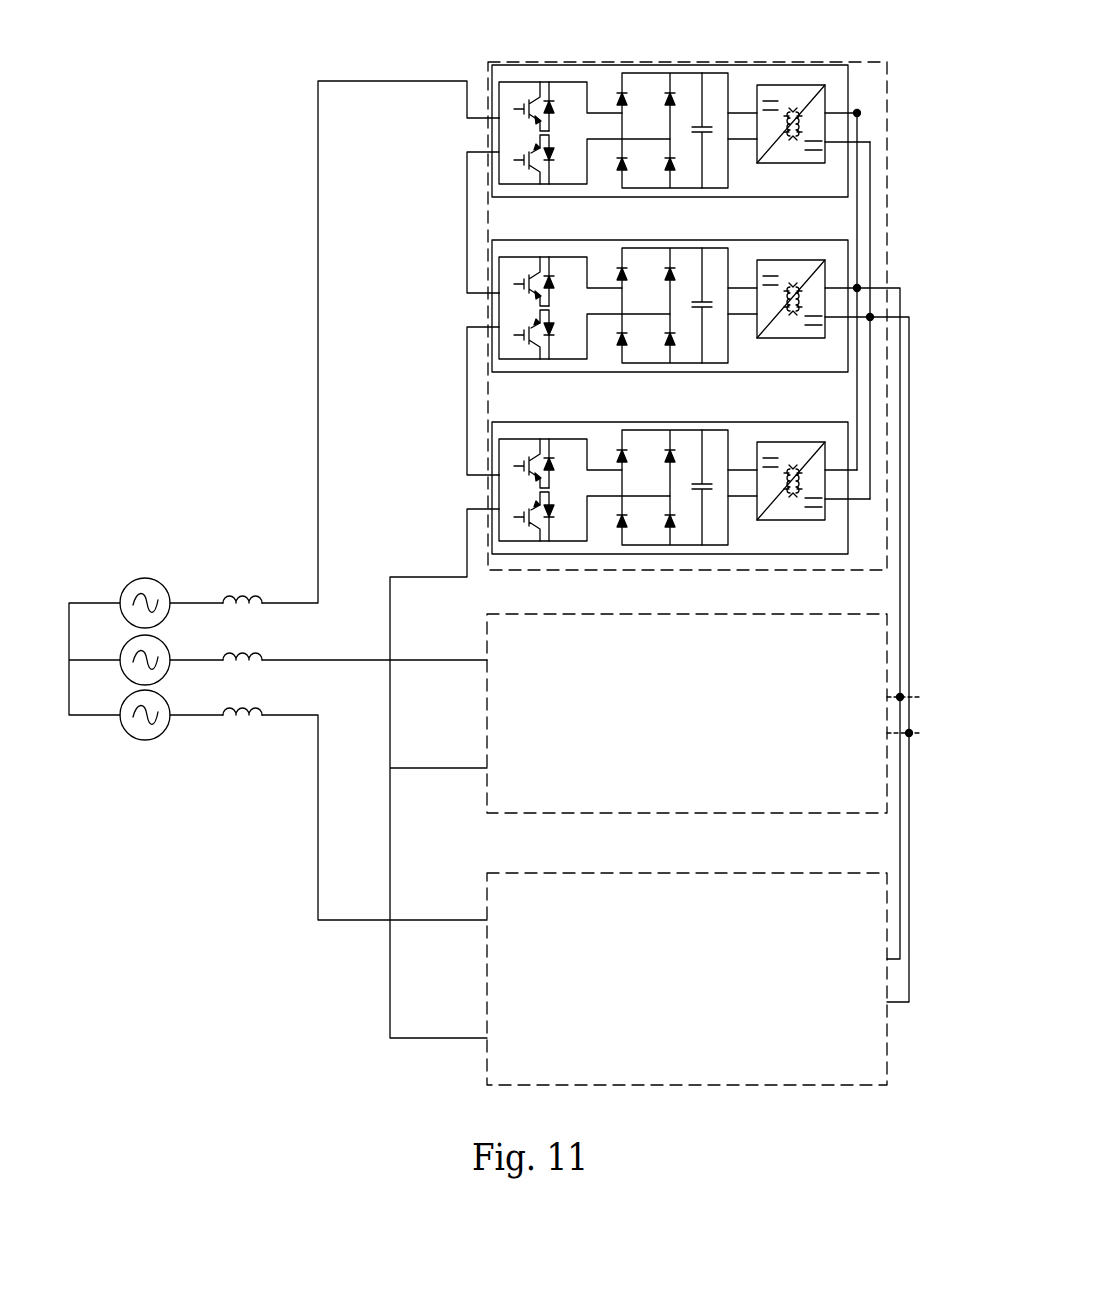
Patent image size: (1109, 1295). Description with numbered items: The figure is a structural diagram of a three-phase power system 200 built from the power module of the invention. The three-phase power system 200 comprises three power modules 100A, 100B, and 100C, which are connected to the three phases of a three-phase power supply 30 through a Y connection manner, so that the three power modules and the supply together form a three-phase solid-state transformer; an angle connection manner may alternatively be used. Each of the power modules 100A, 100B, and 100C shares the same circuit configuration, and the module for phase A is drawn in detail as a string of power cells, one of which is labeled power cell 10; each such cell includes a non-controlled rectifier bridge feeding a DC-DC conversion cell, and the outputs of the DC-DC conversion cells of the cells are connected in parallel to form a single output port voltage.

The three-phase power system 200 is at (198, 98).
The three-phase power supply 30 is at (141, 566).
The power module 100A is at (863, 62).
The power module 100B is at (864, 614).
The power module 100C is at (864, 873).
The power cell 10 is at (848, 85).